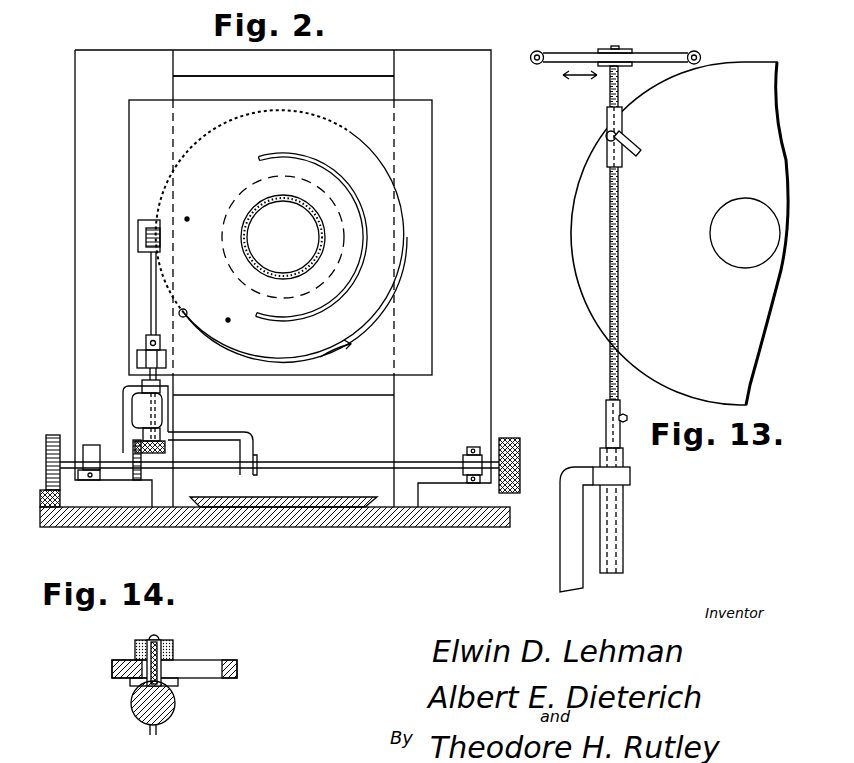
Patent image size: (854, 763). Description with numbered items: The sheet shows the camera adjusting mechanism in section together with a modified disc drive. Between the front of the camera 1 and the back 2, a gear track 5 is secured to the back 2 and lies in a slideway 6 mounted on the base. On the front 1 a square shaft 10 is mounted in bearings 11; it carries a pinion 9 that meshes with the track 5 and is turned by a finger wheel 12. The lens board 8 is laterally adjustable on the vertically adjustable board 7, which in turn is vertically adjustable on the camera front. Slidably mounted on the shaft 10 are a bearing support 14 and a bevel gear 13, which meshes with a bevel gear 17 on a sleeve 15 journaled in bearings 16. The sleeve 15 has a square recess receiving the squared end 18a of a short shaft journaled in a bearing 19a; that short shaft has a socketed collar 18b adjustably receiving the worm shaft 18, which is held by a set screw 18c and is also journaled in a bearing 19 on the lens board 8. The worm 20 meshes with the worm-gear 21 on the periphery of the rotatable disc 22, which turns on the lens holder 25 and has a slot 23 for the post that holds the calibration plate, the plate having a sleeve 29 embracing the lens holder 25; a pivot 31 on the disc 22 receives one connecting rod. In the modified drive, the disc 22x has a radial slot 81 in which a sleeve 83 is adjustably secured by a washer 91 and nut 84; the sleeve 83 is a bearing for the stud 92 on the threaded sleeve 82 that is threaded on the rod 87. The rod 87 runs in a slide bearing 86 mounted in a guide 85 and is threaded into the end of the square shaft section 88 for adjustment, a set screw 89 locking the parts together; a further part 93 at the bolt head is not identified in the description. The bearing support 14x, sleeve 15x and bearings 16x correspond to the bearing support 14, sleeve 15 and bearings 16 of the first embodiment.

In FIG. 2, the front of the camera 1 is at (457, 58).
In FIG. 2, the back of the camera 2 is at (487, 0).
In FIG. 2, the gear track 5 is at (40, 508).
In FIG. 2, the slideway 6 is at (40, 496).
In FIG. 2, the vertically adjustable board 7 is at (383, 91).
In FIG. 2, the lens board 8 is at (424, 136).
In FIG. 2, the pinion 9 is at (50, 435).
In FIG. 2, the square shaft 10 is at (279, 452).
In FIG. 2, the bearings 11 is at (90, 445).
In FIG. 2, the finger wheel 12 is at (521, 447).
In FIG. 2, the bevel gear 13 is at (137, 480).
In FIG. 2, the bearing support 14 is at (213, 432).
In FIG. 13, the bearing support 14 is at (607, 128).
In FIG. 2, the sleeve 15 is at (133, 401).
In FIG. 2, the bearings 16 is at (163, 431).
In FIG. 2, the bevel gear 17 is at (166, 450).
In FIG. 2, the worm shaft 18 is at (152, 316).
In FIG. 2, the squared end 18a is at (140, 367).
In FIG. 2, the socketed collar 18b is at (160, 342).
In FIG. 2, the set screw 18c is at (146, 343).
In FIG. 2, the bearing 19 is at (141, 220).
In FIG. 2, the bearing 19a is at (166, 357).
In FIG. 2, the worm 20 is at (160, 238).
In FIG. 2, the worm-gear 21 is at (187, 318).
In FIG. 2, the rotatable disc 22 is at (347, 331).
In FIG. 2, the slot 23 is at (282, 311).
In FIG. 2, the lens holder 25 is at (312, 219).
In FIG. 2, the sleeve 29 is at (283, 197).
In FIG. 2, the pivot 31 is at (187, 219).
In FIG. 13, the disc 22x is at (586, 275).
In FIG. 14, the disc 22x is at (238, 668).
In FIG. 13, the radial slot 81 is at (642, 150).
In FIG. 14, the radial slot 81 is at (213, 665).
In FIG. 13, the threaded sleeve 82 is at (610, 152).
In FIG. 14, the threaded sleeve 82 is at (176, 705).
In FIG. 14, the sleeve 83 is at (180, 668).
In FIG. 14, the nut 84 is at (135, 648).
In FIG. 13, the guide 85 is at (570, 53).
In FIG. 13, the slide bearing 86 is at (626, 50).
In FIG. 13, the rod 87 is at (609, 369).
In FIG. 14, the rod 87 is at (157, 726).
In FIG. 13, the square shaft section 88 is at (606, 410).
In FIG. 13, the set screw 89 is at (627, 416).
In FIG. 14, the washer 91 is at (170, 656).
In FIG. 14, the stud 92 is at (166, 641).
In FIG. 14, the bolt head 93 is at (154, 633).
In FIG. 13, the bearing support 14x is at (560, 548).
In FIG. 13, the sleeve 15x is at (624, 540).
In FIG. 13, the bearings 16x is at (630, 482).